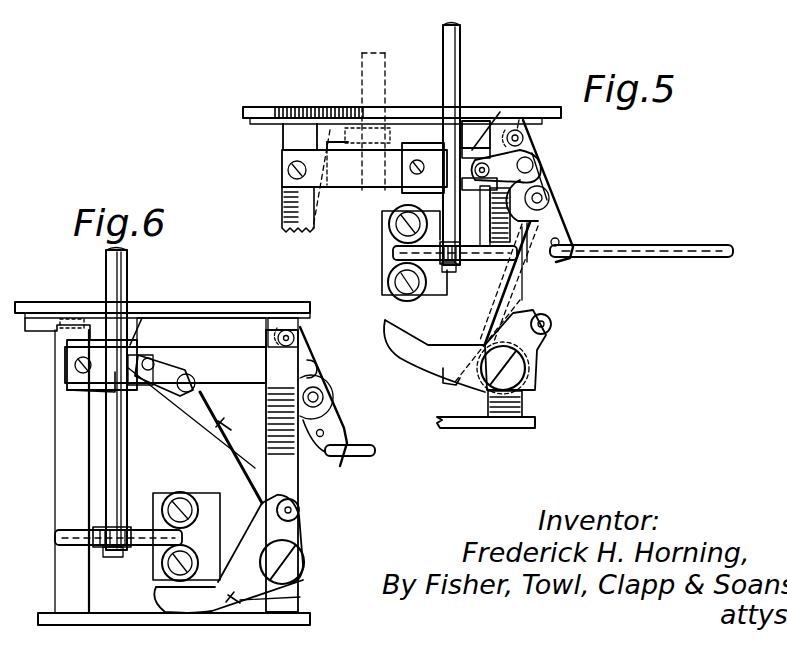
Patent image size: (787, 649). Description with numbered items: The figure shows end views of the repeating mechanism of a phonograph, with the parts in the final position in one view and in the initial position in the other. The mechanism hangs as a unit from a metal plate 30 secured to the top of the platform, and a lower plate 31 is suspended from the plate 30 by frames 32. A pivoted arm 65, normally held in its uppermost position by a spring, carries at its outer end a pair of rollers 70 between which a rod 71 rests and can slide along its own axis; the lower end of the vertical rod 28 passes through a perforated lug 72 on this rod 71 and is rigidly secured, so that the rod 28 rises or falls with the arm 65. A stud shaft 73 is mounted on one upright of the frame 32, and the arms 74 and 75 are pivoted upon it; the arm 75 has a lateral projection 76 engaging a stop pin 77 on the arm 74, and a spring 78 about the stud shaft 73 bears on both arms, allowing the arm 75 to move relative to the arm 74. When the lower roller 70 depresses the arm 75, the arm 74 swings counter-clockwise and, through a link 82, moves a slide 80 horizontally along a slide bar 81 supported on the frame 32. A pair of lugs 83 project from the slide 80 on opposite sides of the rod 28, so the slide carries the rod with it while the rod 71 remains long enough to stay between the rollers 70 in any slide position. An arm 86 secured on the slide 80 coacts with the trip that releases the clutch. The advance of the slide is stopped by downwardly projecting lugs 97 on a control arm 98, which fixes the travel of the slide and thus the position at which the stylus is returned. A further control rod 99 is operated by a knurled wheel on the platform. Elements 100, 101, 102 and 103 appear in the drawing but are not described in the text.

In FIG. 5, the rod 28 is at (362, 68).
In FIG. 6, the rod 28 is at (128, 258).
In FIG. 5, the metal plate 30 is at (258, 107).
In FIG. 6, the metal plate 30 is at (254, 302).
In FIG. 5, the lower plate 31 is at (483, 430).
In FIG. 6, the lower plate 31 is at (45, 613).
In FIG. 5, the frames 32 is at (292, 206).
In FIG. 6, the frames 32 is at (62, 453).
In FIG. 5, the arm 65 is at (446, 296).
In FIG. 6, the arm 65 is at (210, 505).
In FIG. 5, the rollers 70 is at (390, 224).
In FIG. 6, the rollers 70 is at (170, 492).
In FIG. 5, the rod 71 is at (393, 254).
In FIG. 6, the rod 71 is at (60, 528).
In FIG. 5, the perforated lug 72 is at (460, 250).
In FIG. 6, the perforated lug 72 is at (110, 558).
In FIG. 5, the stud shaft 73 is at (517, 371).
In FIG. 6, the stud shaft 73 is at (294, 570).
In FIG. 5, the arm 74 is at (500, 290).
In FIG. 6, the arm 74 is at (212, 462).
In FIG. 5, the arm 75 is at (405, 360).
In FIG. 6, the arm 75 is at (165, 596).
In FIG. 5, the lateral projection 76 is at (530, 320).
In FIG. 6, the lateral projection 76 is at (283, 535).
In FIG. 5, the stop pin 77 is at (552, 328).
In FIG. 6, the stop pin 77 is at (300, 512).
In FIG. 5, the spring 78 is at (522, 295).
In FIG. 6, the spring 78 is at (230, 430).
In FIG. 5, the slide 80 is at (415, 143).
In FIG. 6, the slide 80 is at (160, 348).
In FIG. 5, the slide bar 81 is at (282, 162).
In FIG. 6, the slide bar 81 is at (230, 356).
In FIG. 5, the link 82 is at (548, 168).
In FIG. 6, the link 82 is at (165, 392).
In FIG. 5, the lugs 83 is at (430, 150).
In FIG. 6, the lugs 83 is at (95, 378).
In FIG. 5, the arm 86 is at (478, 128).
In FIG. 6, the arm 86 is at (138, 338).
In FIG. 5, the lugs 97 is at (325, 135).
In FIG. 6, the lugs 97 is at (88, 334).
In FIG. 5, the control arm 98 is at (478, 120).
In FIG. 6, the control arm 98 is at (200, 318).
In FIG. 5, the rod 99 is at (688, 245).
In FIG. 6, the rod 99 is at (368, 456).
In FIG. 5, the cam 100 is at (556, 222).
In FIG. 6, the cam 100 is at (338, 437).
In FIG. 5, the pawl 101 is at (520, 120).
In FIG. 6, the pawl 101 is at (298, 340).
In FIG. 5, the pin 102 is at (543, 198).
In FIG. 6, the pin 102 is at (320, 400).
In FIG. 5, the plate 103 is at (538, 146).
In FIG. 6, the plate 103 is at (308, 352).